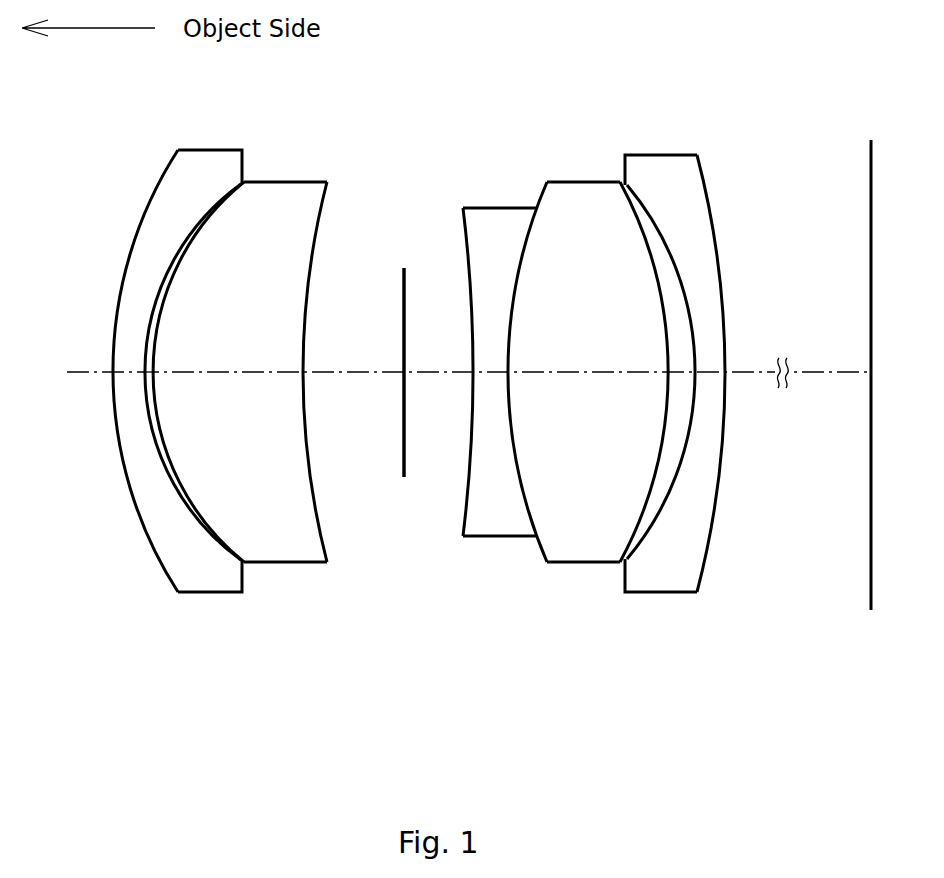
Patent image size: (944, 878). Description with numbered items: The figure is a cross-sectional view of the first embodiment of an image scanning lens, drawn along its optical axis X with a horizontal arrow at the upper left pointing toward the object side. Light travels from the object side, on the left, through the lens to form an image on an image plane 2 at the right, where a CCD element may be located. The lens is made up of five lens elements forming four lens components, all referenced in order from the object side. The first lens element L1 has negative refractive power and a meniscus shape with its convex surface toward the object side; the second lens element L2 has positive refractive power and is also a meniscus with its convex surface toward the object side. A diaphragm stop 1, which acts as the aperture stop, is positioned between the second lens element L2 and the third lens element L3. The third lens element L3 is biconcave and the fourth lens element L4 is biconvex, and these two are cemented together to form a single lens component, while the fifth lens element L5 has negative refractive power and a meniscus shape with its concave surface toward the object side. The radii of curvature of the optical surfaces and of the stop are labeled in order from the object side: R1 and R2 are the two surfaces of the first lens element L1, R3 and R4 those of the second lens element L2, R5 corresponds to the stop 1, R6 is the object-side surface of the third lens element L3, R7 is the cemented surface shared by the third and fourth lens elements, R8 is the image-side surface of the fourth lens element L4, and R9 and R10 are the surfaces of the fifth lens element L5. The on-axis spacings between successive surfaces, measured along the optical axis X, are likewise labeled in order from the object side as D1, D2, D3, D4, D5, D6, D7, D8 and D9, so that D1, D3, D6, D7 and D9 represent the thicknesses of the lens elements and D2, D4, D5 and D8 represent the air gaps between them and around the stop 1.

The optical axis X is at (66, 380).
The stop 1 is at (402, 365).
The image plane 2 is at (871, 140).
The first lens element L1 is at (171, 402).
The second lens element L2 is at (269, 437).
The third lens element L3 is at (497, 425).
The fourth lens element L4 is at (588, 438).
The fifth lens element L5 is at (700, 376).
The radius of curvature of first surface R1 is at (163, 176).
The radius of curvature of second surface R2 is at (200, 227).
The radius of curvature of third surface R3 is at (198, 232).
The radius of curvature of fourth surface R4 is at (319, 258).
The radius of curvature of fifth surface R5 is at (407, 297).
The radius of curvature of sixth surface R6 is at (469, 256).
The radius of curvature of seventh surface R7 is at (523, 267).
The radius of curvature of eighth surface R8 is at (660, 313).
The radius of curvature of ninth surface R9 is at (660, 222).
The radius of curvature of tenth surface R10 is at (710, 206).
The first on-axis surface spacing D1 is at (132, 367).
The second on-axis surface spacing D2 is at (147, 369).
The third on-axis surface spacing D3 is at (244, 368).
The fourth on-axis surface spacing D4 is at (358, 378).
The fifth on-axis surface spacing D5 is at (450, 377).
The sixth on-axis surface spacing D6 is at (495, 376).
The seventh on-axis surface spacing D7 is at (581, 382).
The eighth on-axis surface spacing D8 is at (672, 378).
The ninth on-axis surface spacing D9 is at (714, 375).